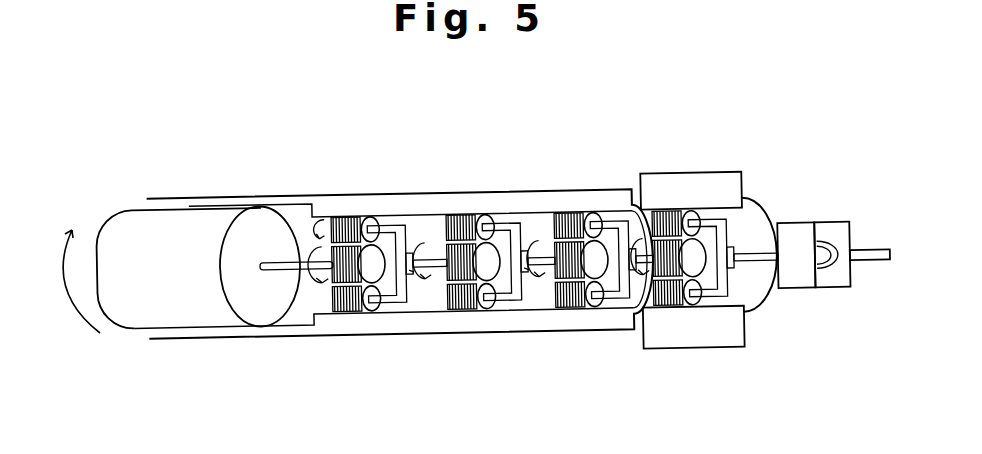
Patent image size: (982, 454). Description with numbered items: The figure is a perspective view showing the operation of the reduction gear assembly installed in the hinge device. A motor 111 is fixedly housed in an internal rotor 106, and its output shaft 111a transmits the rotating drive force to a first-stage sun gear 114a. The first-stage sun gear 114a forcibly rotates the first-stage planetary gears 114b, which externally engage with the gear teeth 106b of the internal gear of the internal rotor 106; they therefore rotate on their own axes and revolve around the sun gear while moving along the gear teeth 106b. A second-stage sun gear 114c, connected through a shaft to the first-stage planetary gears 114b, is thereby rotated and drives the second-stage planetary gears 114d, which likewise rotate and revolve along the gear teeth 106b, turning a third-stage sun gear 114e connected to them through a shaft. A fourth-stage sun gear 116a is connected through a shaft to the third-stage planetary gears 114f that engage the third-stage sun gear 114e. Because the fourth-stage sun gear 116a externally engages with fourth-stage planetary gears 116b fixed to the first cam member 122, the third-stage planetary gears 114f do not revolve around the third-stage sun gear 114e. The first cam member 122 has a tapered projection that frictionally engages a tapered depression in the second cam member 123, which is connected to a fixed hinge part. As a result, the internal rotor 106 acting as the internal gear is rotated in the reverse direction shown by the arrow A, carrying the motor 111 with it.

The internal rotor 106 is at (196, 199).
The gear teeth of the internal gear 106b is at (415, 222).
The motor 111 is at (167, 316).
The output shaft of the motor 111a is at (273, 268).
The first-stage sun gear 114a is at (384, 240).
The first-stage planetary gears 114b is at (378, 308).
The second-stage sun gear 114c is at (503, 250).
The second-stage planetary gears 114d is at (490, 303).
The third-stage sun gear 114e is at (608, 255).
The third-stage planetary gears 114f is at (598, 303).
The fourth-stage sun gear 116a is at (713, 232).
The fourth-stage planetary gears 116b is at (702, 293).
The first cam member 122 is at (793, 283).
The second cam member 123 is at (838, 283).
The arrow A is at (65, 288).